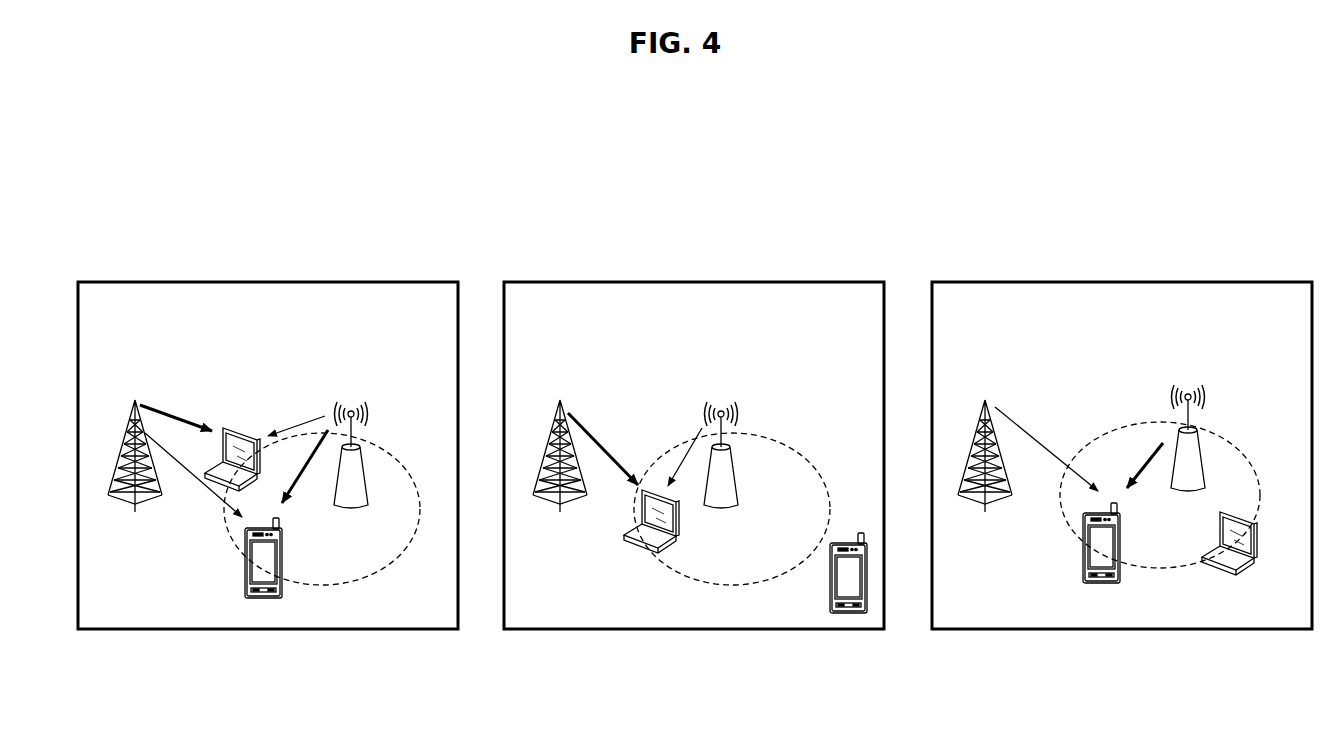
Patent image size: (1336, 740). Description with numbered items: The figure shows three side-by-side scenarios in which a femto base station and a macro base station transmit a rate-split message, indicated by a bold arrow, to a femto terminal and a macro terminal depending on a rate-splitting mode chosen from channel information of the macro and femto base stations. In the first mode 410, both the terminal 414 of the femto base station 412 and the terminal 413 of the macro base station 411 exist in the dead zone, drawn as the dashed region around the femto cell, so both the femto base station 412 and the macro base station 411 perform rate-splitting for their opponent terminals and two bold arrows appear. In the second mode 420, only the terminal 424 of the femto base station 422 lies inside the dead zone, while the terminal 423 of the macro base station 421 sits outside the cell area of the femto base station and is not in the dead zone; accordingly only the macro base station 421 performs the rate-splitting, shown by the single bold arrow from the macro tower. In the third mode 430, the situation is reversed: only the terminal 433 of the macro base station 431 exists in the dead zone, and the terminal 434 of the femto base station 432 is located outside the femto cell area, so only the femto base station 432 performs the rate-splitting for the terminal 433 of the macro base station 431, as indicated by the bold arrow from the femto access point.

The first mode 410 is at (265, 281).
The macro base station 411 is at (148, 500).
The femto base station 412 is at (351, 508).
The terminal of macro base station 413 is at (265, 598).
The terminal of femto base station 414 is at (245, 425).
The second mode 420 is at (690, 281).
The macro base station 421 is at (575, 500).
The femto base station 422 is at (722, 508).
The terminal of macro base station 423 is at (848, 615).
The terminal of femto base station 424 is at (655, 487).
The third mode scenario 430 is at (1115, 281).
The macro base station 431 is at (998, 497).
The femto base station 432 is at (1205, 460).
The terminal of macro base station 433 is at (1100, 585).
The terminal of femto base station 434 is at (1240, 570).